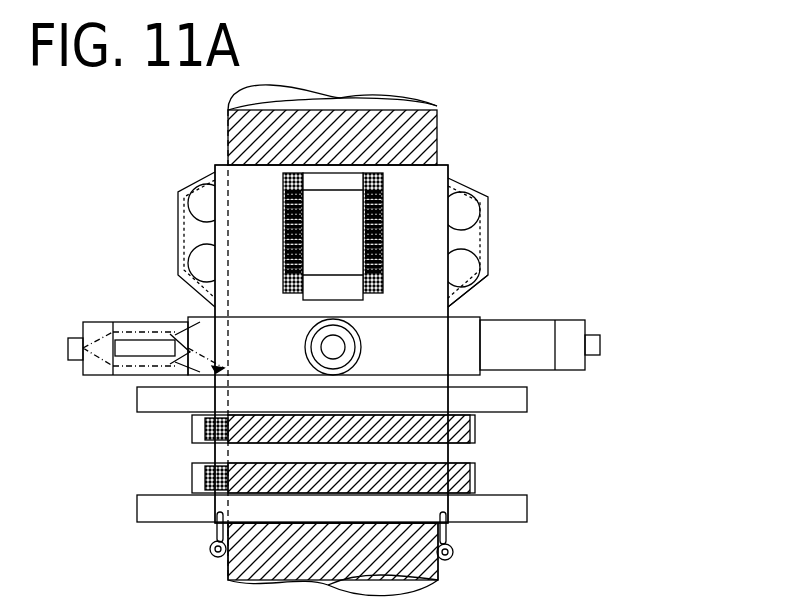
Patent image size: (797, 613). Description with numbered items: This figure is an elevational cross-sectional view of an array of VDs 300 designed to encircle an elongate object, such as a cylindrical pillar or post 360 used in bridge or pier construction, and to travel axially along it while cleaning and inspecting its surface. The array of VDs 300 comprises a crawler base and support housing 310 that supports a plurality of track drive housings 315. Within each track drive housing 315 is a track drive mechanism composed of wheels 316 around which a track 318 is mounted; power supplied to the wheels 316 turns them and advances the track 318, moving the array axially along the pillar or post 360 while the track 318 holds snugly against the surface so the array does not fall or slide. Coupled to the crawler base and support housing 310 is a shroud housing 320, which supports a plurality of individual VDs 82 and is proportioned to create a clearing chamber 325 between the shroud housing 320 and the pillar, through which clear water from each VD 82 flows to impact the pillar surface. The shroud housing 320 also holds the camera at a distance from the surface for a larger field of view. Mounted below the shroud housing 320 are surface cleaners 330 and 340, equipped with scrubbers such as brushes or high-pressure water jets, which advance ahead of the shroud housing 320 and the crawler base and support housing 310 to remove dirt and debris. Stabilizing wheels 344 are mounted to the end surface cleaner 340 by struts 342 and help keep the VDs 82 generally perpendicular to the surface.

The array of VDs 300 is at (652, 150).
The pillar or post 360 is at (438, 137).
The crawler base and support housing 310 is at (436, 182).
The track 318 is at (183, 236).
The wheels 316 is at (458, 266).
The track drive housing 315 is at (486, 278).
The shroud housing 320 is at (455, 330).
The clearing chamber 325 is at (224, 322).
The VD 82 is at (572, 362).
The surface cleaner 330 is at (553, 440).
The surface cleaner 340 is at (553, 467).
The struts 342 is at (450, 540).
The stabilizing wheels 344 is at (449, 560).